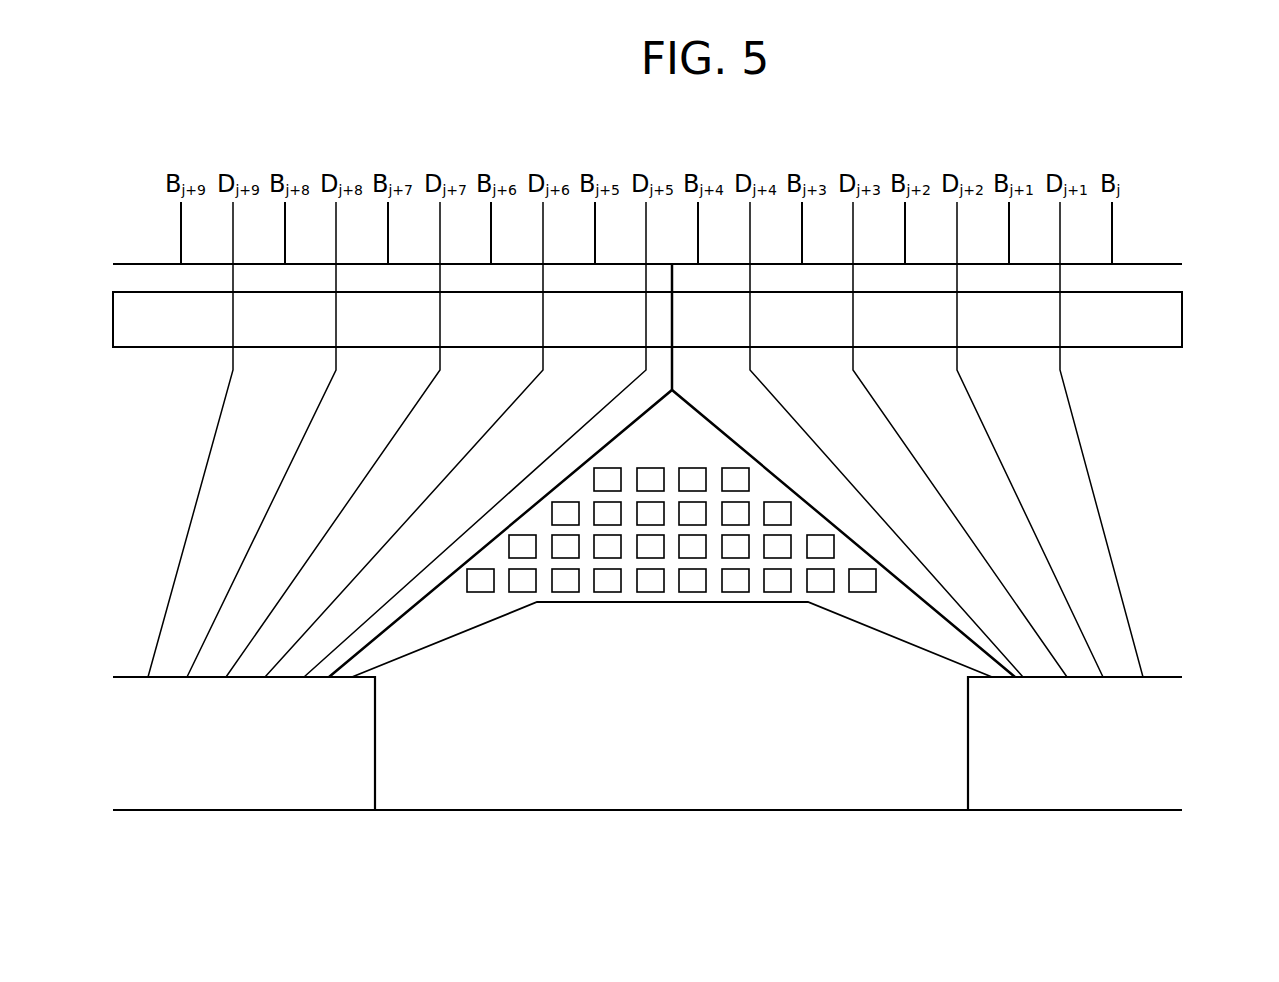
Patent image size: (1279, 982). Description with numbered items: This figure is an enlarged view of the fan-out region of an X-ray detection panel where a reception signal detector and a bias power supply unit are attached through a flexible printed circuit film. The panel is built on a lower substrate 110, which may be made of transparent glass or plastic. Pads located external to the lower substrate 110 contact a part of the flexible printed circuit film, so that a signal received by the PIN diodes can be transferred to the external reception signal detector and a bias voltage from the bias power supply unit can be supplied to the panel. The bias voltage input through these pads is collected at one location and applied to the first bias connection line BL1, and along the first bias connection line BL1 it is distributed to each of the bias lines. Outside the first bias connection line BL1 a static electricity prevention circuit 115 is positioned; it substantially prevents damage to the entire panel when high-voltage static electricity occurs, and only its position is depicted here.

The first bias connection line BL1 is at (1160, 267).
The static electricity prevention circuit 115 is at (1183, 322).
The lower substrate 110 is at (805, 787).